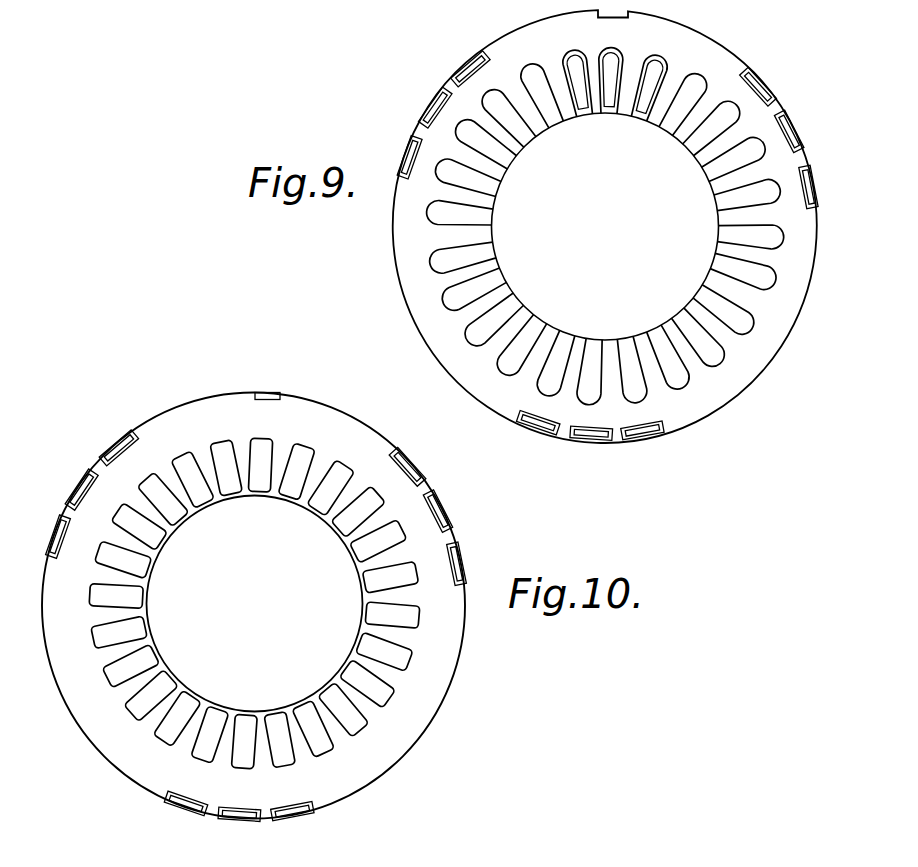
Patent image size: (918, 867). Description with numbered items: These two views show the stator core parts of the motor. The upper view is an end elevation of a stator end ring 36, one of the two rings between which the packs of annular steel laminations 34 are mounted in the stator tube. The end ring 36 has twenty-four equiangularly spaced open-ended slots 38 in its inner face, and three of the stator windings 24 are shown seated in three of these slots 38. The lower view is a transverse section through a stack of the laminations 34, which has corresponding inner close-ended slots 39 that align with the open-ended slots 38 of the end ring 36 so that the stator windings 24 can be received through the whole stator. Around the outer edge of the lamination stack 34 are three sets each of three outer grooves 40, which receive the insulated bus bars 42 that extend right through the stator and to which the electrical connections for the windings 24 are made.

In FIG. 9, the stator windings 24 is at (644, 104).
In FIG. 9, the end ring 36 is at (406, 222).
In FIG. 9, the open-ended slot 38 is at (488, 191).
In FIG. 9, the insulated bus bar 42 is at (410, 156).
In FIG. 10, the annular steel lamination 34 is at (445, 643).
In FIG. 10, the close-ended slot 39 is at (190, 694).
In FIG. 10, the outer groove 40 is at (55, 523).